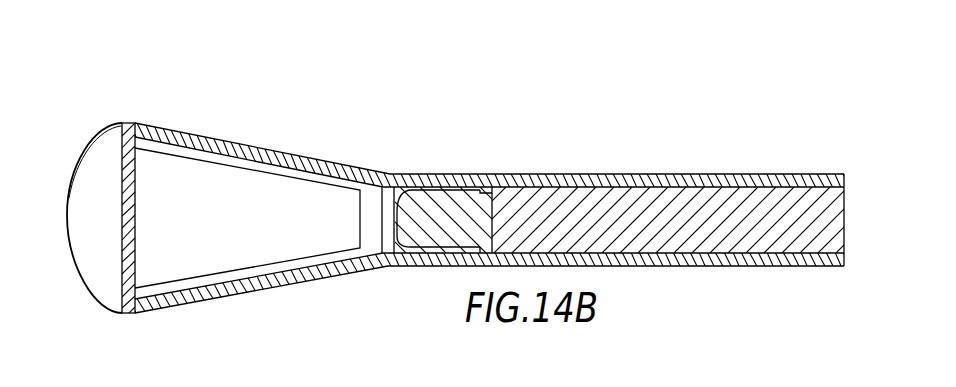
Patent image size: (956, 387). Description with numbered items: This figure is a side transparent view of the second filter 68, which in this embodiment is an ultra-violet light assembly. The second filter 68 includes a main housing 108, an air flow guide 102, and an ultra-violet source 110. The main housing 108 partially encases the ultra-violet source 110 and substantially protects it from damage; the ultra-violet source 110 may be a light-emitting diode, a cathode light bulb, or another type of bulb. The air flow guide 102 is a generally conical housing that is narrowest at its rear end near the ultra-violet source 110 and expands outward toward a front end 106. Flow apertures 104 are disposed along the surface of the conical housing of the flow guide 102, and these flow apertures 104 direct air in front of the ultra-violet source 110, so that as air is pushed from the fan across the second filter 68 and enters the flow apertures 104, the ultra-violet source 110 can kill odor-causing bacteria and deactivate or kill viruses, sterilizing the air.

The second filter 68 is at (263, 112).
The air flow guide 102 is at (187, 138).
The flow apertures 104 is at (293, 235).
The front end 106 is at (100, 285).
The main housing 108 is at (637, 180).
The ultra-violet source 110 is at (450, 208).